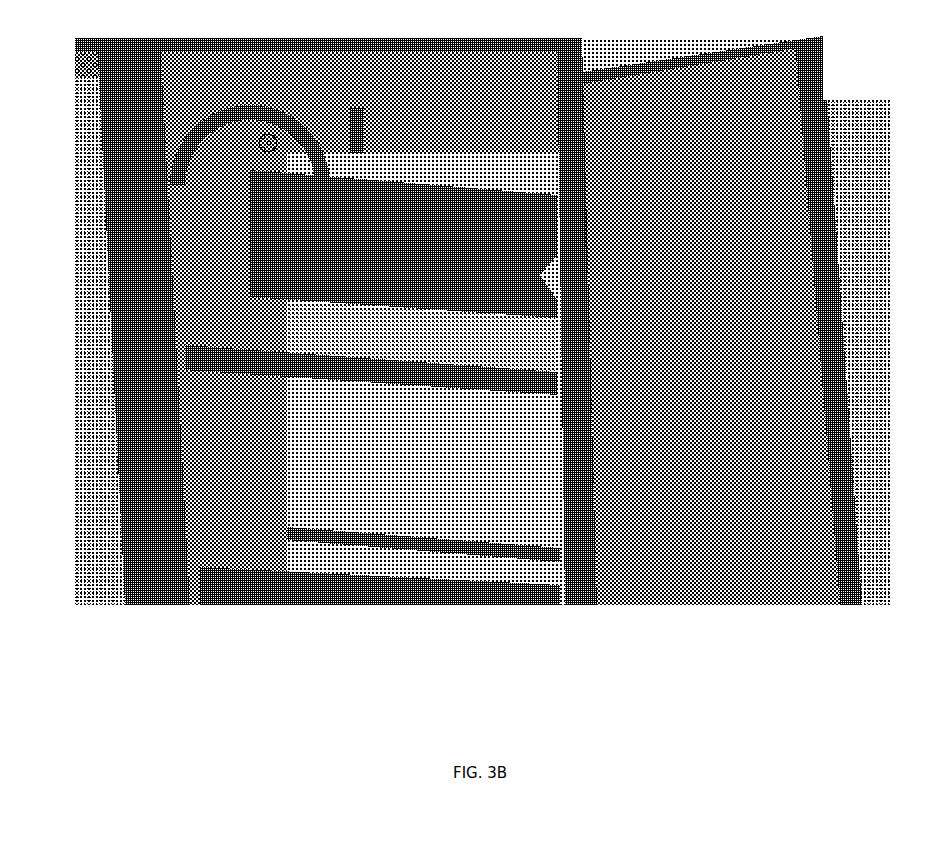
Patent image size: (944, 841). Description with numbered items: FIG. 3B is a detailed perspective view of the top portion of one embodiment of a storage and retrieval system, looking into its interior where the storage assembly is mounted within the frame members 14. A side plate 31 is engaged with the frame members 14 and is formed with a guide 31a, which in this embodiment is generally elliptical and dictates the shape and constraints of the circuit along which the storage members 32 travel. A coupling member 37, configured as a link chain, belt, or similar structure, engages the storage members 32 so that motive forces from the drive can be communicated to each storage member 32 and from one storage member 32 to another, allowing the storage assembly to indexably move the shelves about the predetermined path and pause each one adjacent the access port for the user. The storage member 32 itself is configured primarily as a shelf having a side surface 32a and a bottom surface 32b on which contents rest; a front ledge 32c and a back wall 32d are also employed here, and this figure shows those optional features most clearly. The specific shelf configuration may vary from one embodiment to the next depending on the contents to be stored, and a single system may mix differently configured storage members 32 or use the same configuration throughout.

The frame member 14 is at (123, 392).
The side plate 31 is at (756, 406).
The guide 31a is at (183, 170).
The storage member 32 is at (210, 582).
The side surface 32a is at (248, 463).
The bottom surface 32b is at (363, 342).
The front ledge 32c is at (390, 568).
The back wall 32d is at (411, 463).
The coupling member 37 is at (268, 144).